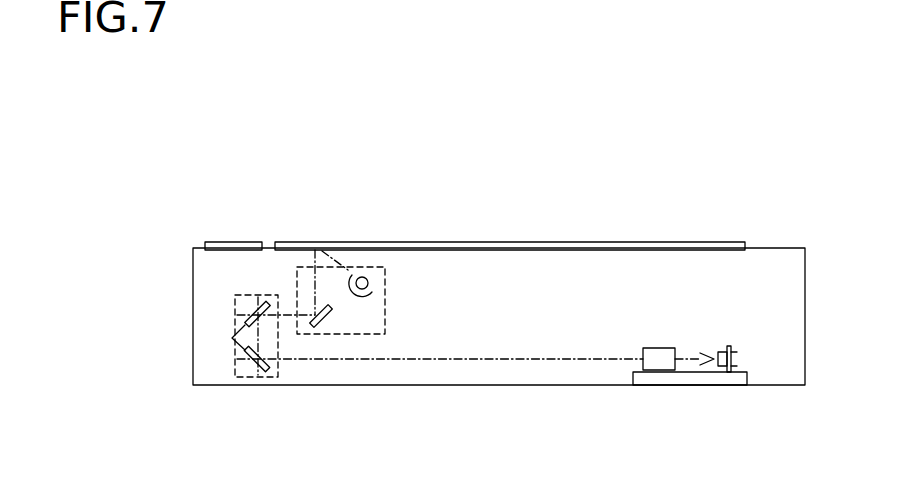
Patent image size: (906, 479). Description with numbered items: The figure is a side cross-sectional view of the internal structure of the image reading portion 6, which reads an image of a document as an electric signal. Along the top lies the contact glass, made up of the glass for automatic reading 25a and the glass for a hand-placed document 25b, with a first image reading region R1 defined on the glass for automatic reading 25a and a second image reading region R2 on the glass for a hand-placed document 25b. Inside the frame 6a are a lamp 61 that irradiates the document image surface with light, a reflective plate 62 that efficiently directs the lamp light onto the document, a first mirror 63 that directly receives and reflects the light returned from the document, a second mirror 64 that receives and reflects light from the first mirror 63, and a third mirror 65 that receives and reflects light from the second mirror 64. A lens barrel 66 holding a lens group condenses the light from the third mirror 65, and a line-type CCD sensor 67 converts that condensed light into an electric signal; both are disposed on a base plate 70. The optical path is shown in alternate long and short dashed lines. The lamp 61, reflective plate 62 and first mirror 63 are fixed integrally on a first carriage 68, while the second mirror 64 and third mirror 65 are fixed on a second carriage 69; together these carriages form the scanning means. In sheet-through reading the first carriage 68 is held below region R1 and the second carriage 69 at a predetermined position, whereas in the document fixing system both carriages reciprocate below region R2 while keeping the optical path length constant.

The image reading portion 6 is at (271, 166).
The frame 6a is at (193, 300).
The glass for automatic reading 25a is at (225, 247).
The glass for a hand-placed document 25b is at (543, 248).
The first image reading region R1 is at (225, 250).
The second image reading region R2 is at (575, 250).
The lamp 61 is at (369, 282).
The reflective plate 62 is at (372, 290).
The first mirror 63 is at (326, 326).
The second mirror 64 is at (248, 317).
The third mirror 65 is at (255, 362).
The lens barrel 66 is at (655, 348).
The CCD sensor 67 is at (728, 348).
The first carriage 68 is at (385, 327).
The second carriage 69 is at (252, 378).
The base plate 70 is at (748, 378).